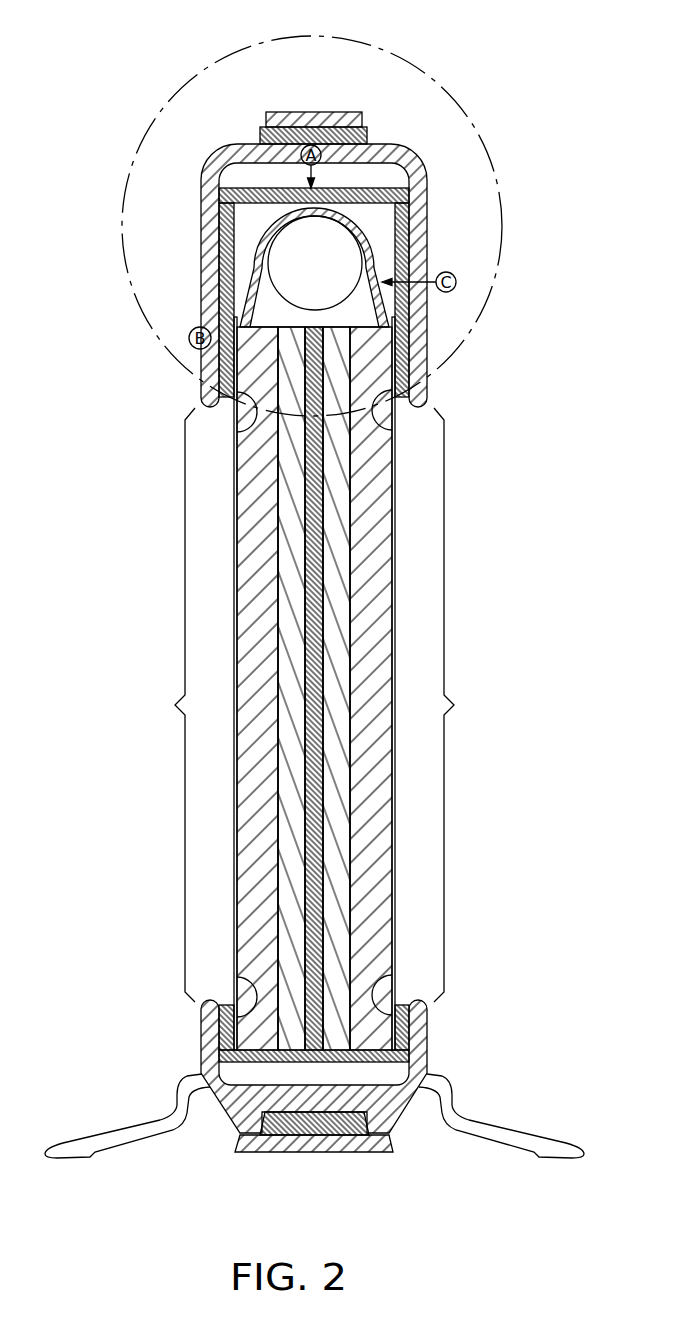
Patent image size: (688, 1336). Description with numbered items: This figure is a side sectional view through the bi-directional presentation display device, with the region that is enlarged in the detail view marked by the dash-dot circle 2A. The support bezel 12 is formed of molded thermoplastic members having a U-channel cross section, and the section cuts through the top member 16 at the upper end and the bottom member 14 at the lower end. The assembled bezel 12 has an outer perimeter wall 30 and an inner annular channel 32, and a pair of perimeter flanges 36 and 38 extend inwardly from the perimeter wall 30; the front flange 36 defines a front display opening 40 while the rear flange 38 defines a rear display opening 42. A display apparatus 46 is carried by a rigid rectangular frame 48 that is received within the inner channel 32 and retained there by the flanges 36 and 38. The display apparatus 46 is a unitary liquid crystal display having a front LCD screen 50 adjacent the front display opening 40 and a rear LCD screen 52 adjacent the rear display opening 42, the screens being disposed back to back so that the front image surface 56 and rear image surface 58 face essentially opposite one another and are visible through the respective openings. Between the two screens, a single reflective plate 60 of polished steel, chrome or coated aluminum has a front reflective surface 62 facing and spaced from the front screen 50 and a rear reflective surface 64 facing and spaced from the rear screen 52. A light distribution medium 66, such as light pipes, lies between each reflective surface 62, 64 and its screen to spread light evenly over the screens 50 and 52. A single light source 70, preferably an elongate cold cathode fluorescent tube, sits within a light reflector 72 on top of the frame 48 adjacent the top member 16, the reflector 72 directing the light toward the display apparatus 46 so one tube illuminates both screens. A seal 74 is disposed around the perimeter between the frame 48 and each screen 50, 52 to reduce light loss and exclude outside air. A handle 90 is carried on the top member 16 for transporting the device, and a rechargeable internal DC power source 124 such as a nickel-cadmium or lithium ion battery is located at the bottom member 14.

The detail view circle of FIG. 2A is at (412, 62).
The support bezel 12 is at (432, 157).
The bottom member 14 is at (382, 1113).
The top member 16 is at (243, 152).
The outer perimeter wall 30 is at (302, 110).
The inner annular channel 32 is at (230, 186).
The perimeter flange 36 is at (210, 307).
The rear flange 38 is at (420, 372).
The front display opening 40 is at (165, 705).
The rear display opening 42 is at (464, 705).
The display apparatus 46 is at (203, 730).
The rigid rectangular frame 48 is at (232, 224).
The front LCD screen 50 is at (254, 541).
The rear LCD screen 52 is at (370, 496).
The front image surface 56 is at (237, 603).
The rear image surface 58 is at (391, 574).
The reflective plate 60 is at (323, 747).
The front reflective surface 62 is at (307, 817).
The rear reflective surface 64 is at (322, 833).
The light distribution medium 66 is at (292, 852).
The light source 70 is at (315, 263).
The light reflector 72 is at (388, 214).
The seal 74 is at (240, 430).
The handle 90 is at (353, 135).
The rechargeable internal DC power source 124 is at (275, 1143).